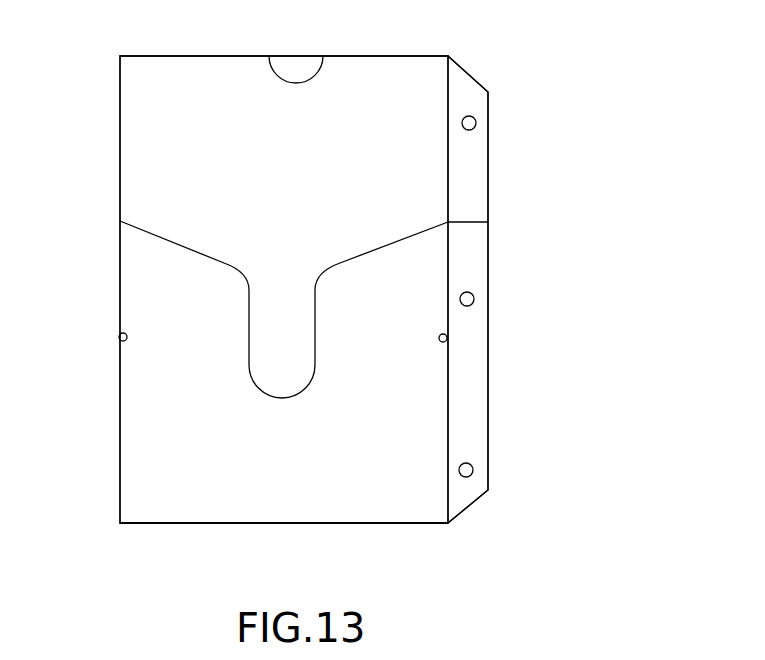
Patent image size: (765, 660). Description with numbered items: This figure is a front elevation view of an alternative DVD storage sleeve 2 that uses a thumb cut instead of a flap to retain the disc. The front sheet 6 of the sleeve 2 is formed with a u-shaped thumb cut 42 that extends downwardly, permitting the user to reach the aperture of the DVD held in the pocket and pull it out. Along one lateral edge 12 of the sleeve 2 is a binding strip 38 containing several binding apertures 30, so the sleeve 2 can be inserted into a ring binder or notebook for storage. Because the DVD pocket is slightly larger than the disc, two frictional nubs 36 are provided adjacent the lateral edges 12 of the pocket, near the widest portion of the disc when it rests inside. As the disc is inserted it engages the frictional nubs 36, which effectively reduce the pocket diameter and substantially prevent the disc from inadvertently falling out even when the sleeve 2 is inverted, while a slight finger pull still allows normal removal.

The DVD storage sleeve 2 is at (546, 86).
The lateral edge 12 is at (120, 100).
The binding strip 38 is at (473, 398).
The front sheet 6 is at (380, 500).
The thumb cut 42 is at (249, 347).
The binding aperture 30 is at (476, 123).
The frictional nub 36 is at (119, 336).